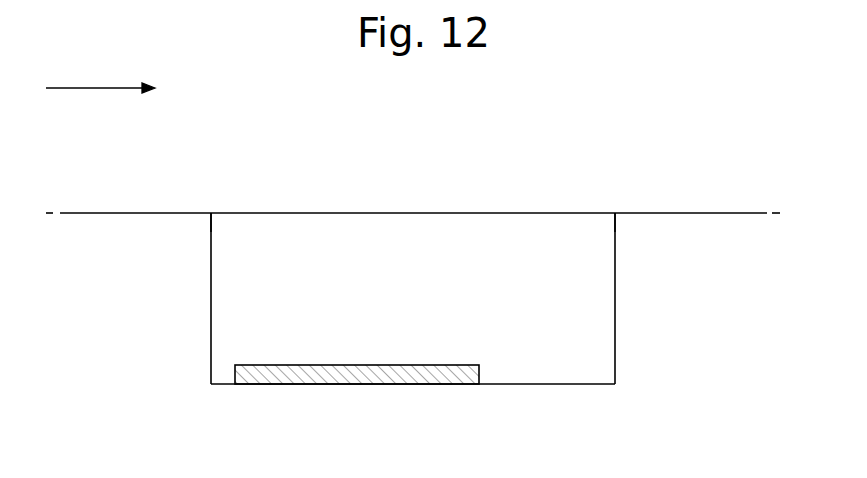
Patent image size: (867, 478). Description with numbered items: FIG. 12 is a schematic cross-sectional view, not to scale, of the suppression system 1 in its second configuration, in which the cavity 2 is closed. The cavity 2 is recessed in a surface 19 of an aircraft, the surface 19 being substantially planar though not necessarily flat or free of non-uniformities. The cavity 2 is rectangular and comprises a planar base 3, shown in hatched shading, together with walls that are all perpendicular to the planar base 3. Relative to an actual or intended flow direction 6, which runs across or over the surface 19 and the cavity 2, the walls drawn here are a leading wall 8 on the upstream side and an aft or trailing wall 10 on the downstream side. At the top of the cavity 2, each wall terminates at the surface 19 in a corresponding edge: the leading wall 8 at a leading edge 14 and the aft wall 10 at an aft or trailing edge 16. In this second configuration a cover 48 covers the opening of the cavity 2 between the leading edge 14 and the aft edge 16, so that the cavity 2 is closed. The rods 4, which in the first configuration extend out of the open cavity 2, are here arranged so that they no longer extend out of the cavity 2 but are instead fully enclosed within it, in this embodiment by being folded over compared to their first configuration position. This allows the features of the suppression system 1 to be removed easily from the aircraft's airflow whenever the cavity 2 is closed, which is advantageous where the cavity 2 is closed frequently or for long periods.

The suppression system 1 is at (645, 82).
The cavity 2 is at (574, 353).
The planar base 3 is at (421, 385).
The rods 4 is at (337, 365).
The flow direction 6 is at (80, 87).
The leading wall 8 is at (211, 317).
The aft wall 10 is at (615, 307).
The leading edge 14 is at (210, 213).
The aft edge 16 is at (615, 213).
The surface 19 is at (96, 213).
The cover 48 is at (428, 213).